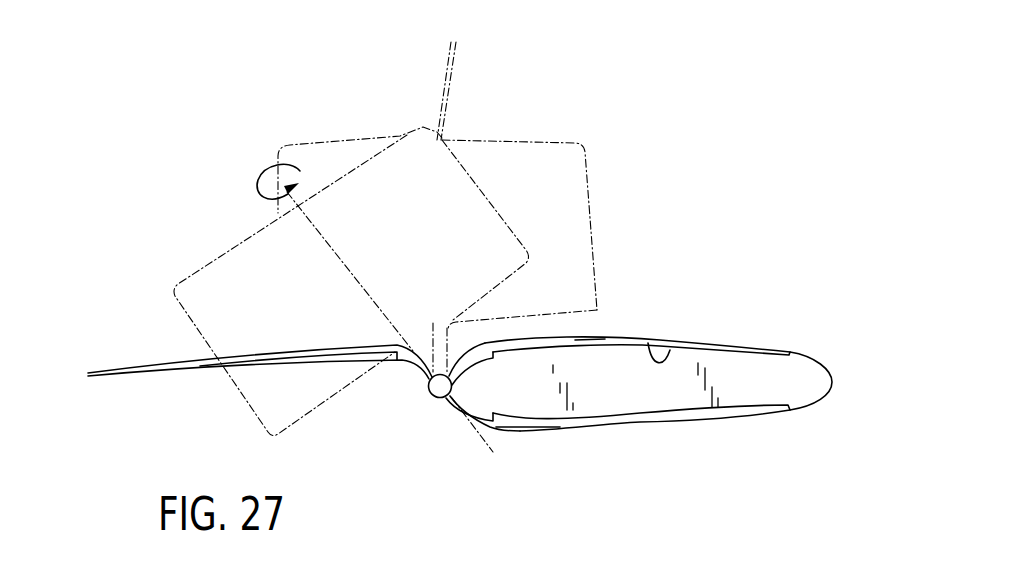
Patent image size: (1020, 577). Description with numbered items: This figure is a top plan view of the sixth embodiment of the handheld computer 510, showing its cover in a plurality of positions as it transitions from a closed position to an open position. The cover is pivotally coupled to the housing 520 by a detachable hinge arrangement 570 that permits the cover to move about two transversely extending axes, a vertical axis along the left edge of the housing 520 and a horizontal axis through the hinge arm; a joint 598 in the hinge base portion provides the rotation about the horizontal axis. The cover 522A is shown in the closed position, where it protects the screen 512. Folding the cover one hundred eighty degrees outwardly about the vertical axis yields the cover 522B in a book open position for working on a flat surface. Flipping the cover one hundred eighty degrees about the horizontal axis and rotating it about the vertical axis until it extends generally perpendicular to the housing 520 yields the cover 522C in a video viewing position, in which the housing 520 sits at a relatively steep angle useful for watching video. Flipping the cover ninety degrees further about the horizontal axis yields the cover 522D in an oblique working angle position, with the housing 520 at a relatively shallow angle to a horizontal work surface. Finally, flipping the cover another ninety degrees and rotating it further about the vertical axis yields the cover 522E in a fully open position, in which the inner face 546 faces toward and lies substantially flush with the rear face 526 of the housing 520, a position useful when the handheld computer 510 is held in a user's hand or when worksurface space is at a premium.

The handheld computer 510 is at (712, 283).
The screen 512 is at (530, 423).
The housing 520 is at (822, 365).
The cover in closed position 522A is at (684, 428).
The cover in book open position 522B is at (148, 377).
The cover in video viewing position 522C is at (453, 82).
The cover in oblique working angle position 522D is at (593, 190).
The cover in fully open position 522E is at (718, 343).
The rear face 526 is at (592, 350).
The inner face 546 is at (650, 345).
The detachable hinge arrangement 570 is at (428, 408).
The joint 598 is at (402, 365).